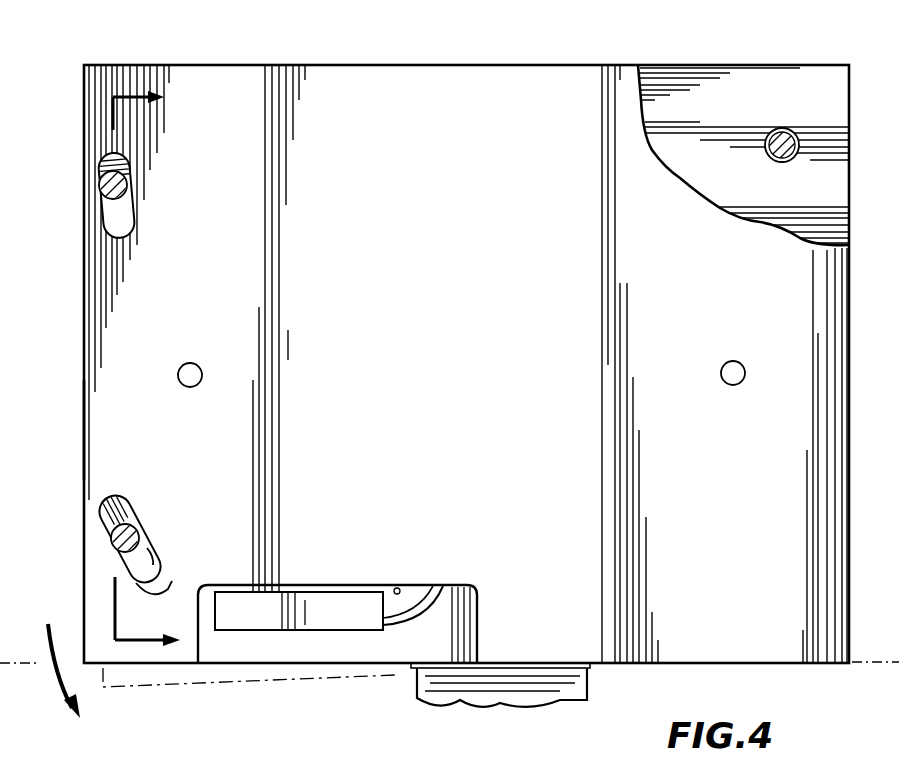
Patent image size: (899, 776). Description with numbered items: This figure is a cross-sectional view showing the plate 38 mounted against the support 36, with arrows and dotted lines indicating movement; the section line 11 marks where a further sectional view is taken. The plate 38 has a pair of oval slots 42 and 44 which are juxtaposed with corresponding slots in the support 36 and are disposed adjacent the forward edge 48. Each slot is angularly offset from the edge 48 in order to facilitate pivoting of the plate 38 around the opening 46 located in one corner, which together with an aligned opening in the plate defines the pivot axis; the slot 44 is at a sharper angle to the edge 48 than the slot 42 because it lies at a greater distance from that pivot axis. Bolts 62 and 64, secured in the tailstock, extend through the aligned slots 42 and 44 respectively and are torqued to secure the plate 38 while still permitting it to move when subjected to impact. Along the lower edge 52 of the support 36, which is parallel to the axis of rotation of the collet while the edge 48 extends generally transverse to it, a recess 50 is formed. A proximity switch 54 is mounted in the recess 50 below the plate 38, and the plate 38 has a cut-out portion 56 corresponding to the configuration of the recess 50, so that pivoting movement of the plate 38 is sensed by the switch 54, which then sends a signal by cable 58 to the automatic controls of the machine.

The section line 11- 11 is at (112, 107).
The support 36 is at (757, 78).
The plate 38 is at (452, 65).
The oval slot 42 is at (128, 218).
The oval slot 44 is at (152, 560).
The opening 46 is at (782, 130).
The forward edge 48 is at (66, 438).
The recess 50 is at (476, 615).
The lower edge 52 is at (629, 675).
The proximity switch 54 is at (333, 600).
The cut-out portion 56 is at (400, 590).
The cable 58 is at (404, 618).
The bolt 62 is at (128, 192).
The bolt 64 is at (108, 540).